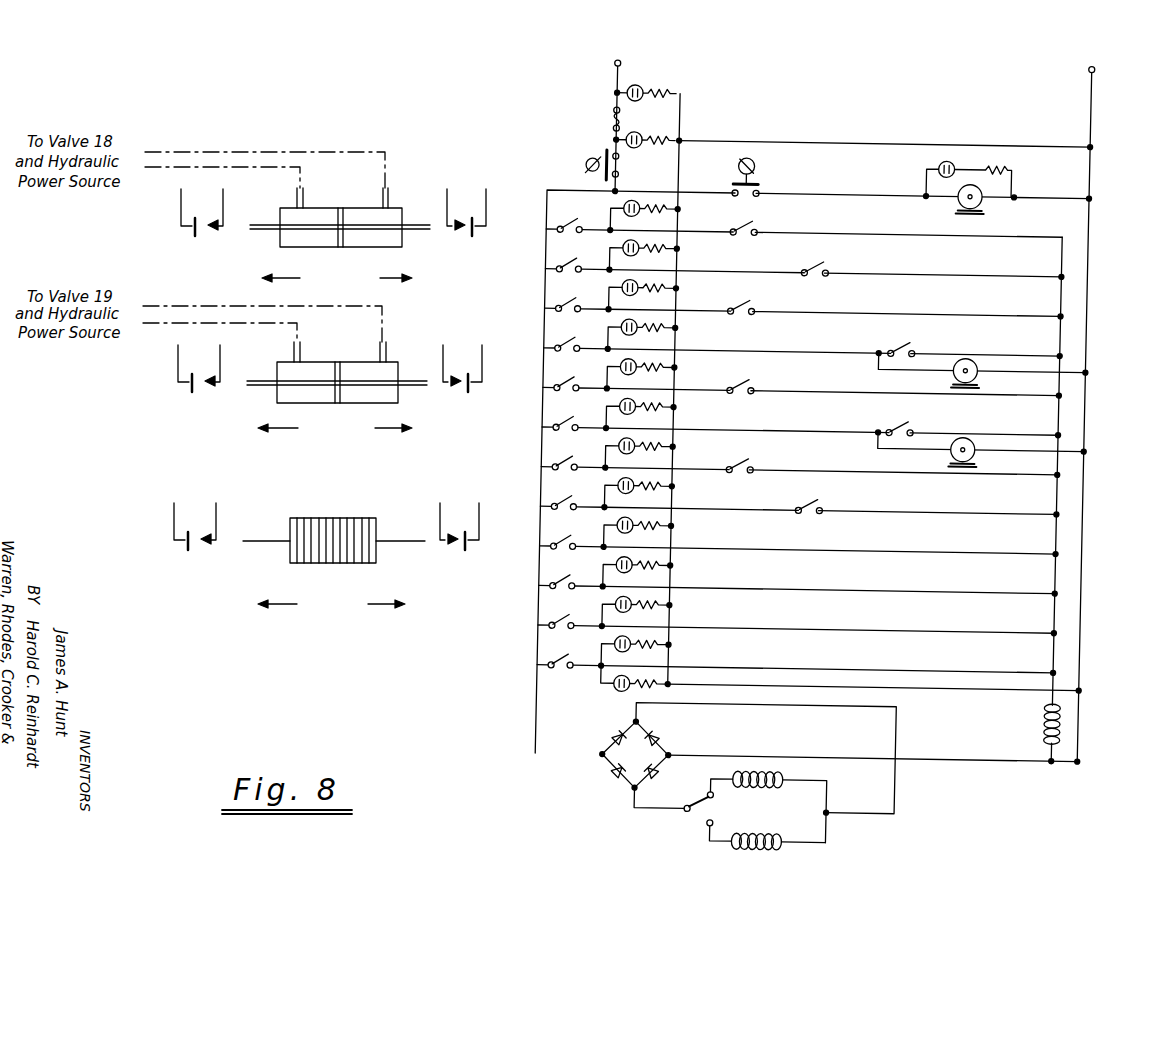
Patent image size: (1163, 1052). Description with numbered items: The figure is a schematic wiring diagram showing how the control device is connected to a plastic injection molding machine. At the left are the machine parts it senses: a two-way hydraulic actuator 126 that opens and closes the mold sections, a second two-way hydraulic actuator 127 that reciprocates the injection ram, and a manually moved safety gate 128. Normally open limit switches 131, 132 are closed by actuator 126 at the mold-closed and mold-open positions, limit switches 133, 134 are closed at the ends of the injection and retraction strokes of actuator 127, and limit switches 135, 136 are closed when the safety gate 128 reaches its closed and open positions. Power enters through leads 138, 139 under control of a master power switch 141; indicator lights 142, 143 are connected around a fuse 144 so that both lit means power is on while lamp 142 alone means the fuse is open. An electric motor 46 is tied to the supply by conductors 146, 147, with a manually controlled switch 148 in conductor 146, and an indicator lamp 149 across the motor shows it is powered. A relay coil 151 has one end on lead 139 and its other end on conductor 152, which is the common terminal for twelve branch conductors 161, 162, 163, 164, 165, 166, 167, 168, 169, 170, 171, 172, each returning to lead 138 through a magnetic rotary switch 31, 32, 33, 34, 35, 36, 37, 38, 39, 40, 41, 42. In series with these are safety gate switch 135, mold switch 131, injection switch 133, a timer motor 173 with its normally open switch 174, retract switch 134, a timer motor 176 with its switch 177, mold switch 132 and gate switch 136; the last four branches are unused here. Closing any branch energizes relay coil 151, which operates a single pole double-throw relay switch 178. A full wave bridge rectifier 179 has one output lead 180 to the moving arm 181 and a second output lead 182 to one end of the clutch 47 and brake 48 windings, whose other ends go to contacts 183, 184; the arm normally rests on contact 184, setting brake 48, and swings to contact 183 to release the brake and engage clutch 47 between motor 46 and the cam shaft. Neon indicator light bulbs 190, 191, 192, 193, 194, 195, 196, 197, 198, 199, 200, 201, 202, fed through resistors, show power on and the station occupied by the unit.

The two-way hydraulic actuator 126 is at (332, 208).
The two-way hydraulic actuator 127 is at (330, 362).
The safety gate 128 is at (335, 518).
The limit switch 131 is at (197, 237).
The limit switch 132 is at (470, 237).
The limit switch 133 is at (194, 393).
The limit switch 134 is at (466, 393).
The limit switch 135 is at (190, 551).
The limit switch 136 is at (463, 551).
The lead 138 is at (612, 74).
The lead 139 is at (1090, 98).
The master power switch 141 is at (618, 167).
The indicator light 142 is at (641, 86).
The indicator light 143 is at (641, 130).
The fuse 144 is at (613, 115).
The conductor 146 is at (850, 190).
The conductor 147 is at (1054, 186).
The manually controlled switch 148 is at (735, 184).
The indicator lamp 149 is at (939, 162).
The electric motor 46 is at (984, 200).
The magnetic rotary switch 31 is at (571, 224).
The magnetic rotary switch 32 is at (571, 264).
The magnetic rotary switch 33 is at (571, 303).
The magnetic rotary switch 34 is at (571, 343).
The magnetic rotary switch 35 is at (571, 382).
The magnetic rotary switch 36 is at (571, 422).
The magnetic rotary switch 37 is at (571, 462).
The magnetic rotary switch 38 is at (571, 501).
The magnetic rotary switch 39 is at (571, 541).
The magnetic rotary switch 40 is at (571, 580).
The magnetic rotary switch 41 is at (571, 620).
The magnetic rotary switch 42 is at (571, 660).
The indicator light bulb 190 is at (624, 211).
The indicator light bulb 191 is at (624, 251).
The indicator light bulb 192 is at (624, 290).
The indicator light bulb 193 is at (624, 330).
The indicator light bulb 194 is at (624, 369).
The indicator light bulb 195 is at (624, 409).
The indicator light bulb 196 is at (624, 449).
The indicator light bulb 197 is at (624, 488).
The indicator light bulb 198 is at (624, 528).
The indicator light bulb 199 is at (624, 567).
The indicator light bulb 200 is at (624, 607).
The indicator light bulb 201 is at (624, 647).
The indicator light bulb 202 is at (623, 686).
The conductor 161 is at (913, 224).
The conductor 162 is at (968, 264).
The conductor 163 is at (1036, 304).
The conductor 164 is at (1028, 343).
The conductor 165 is at (832, 384).
The conductor 166 is at (1028, 425).
The conductor 167 is at (832, 464).
The conductor 168 is at (903, 504).
The conductor 169 is at (965, 544).
The conductor 170 is at (965, 584).
The conductor 171 is at (965, 623).
The conductor 172 is at (965, 662).
The timer motor 173 is at (983, 369).
The normally open switch 174 is at (896, 341).
The timer motor 176 is at (983, 447).
The normally open switch 177 is at (893, 423).
The relay coil 151 is at (1053, 712).
The conductor 152 is at (1062, 605).
The D.C. rectifier 179 is at (612, 769).
The output lead 180 is at (632, 806).
The output lead 182 is at (752, 701).
The single pole double-throw relay switch 178 is at (697, 812).
The moving arm 181 is at (724, 800).
The switch contact 183 is at (722, 825).
The switch contact 184 is at (719, 792).
The clutch 47 is at (782, 848).
The brake 48 is at (778, 786).